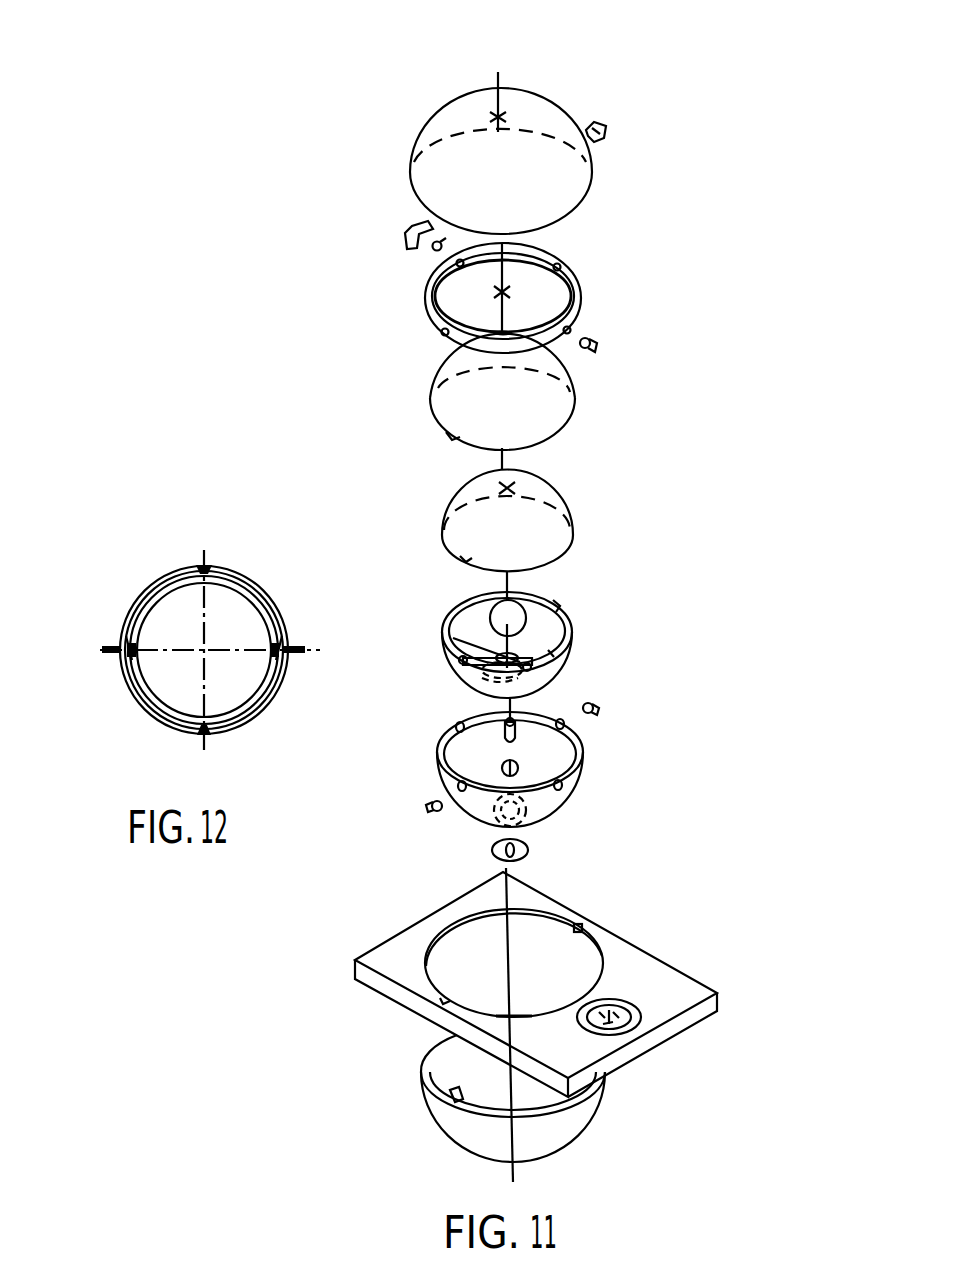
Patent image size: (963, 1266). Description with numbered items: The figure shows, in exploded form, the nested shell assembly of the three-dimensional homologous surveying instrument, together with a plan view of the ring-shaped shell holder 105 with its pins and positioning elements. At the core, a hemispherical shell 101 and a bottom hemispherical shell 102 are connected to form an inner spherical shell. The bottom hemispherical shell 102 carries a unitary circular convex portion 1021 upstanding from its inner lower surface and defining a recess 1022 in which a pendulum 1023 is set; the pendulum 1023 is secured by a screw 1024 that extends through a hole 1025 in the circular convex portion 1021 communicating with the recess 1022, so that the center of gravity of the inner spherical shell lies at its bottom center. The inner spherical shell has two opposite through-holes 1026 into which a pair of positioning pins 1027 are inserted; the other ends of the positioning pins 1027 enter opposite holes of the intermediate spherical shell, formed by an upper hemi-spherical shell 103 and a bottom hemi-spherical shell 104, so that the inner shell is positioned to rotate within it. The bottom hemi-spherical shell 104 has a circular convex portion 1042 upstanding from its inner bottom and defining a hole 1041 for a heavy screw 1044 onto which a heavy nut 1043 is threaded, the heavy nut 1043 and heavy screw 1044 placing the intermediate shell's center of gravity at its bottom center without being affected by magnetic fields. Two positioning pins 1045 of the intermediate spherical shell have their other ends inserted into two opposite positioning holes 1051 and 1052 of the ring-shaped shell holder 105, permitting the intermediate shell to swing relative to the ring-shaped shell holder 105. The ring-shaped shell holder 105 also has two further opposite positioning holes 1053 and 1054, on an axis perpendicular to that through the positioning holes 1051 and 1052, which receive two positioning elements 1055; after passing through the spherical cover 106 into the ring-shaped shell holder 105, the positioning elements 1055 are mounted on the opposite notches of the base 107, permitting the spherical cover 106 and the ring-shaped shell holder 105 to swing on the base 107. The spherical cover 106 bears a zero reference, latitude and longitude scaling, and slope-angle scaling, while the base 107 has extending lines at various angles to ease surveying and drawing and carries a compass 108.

In FIG. 11, the hemispherical shell 101 is at (550, 528).
In FIG. 11, the bottom hemispherical shell 102 is at (560, 612).
In FIG. 12, the bottom hemispherical shell 102 is at (185, 712).
In FIG. 11, the circular convex portion 1021 is at (455, 630).
In FIG. 11, the recess 1022 is at (500, 652).
In FIG. 11, the pendulum 1023 is at (503, 612).
In FIG. 11, the screw 1024 is at (522, 735).
In FIG. 11, the hole 1025 is at (563, 663).
In FIG. 11, the through-hole 1026 is at (552, 596).
In FIG. 11, the positioning pin 1027 is at (594, 708).
In FIG. 12, the positioning pin 1027 is at (131, 642).
In FIG. 11, the upper hemi-spherical shell 103 is at (550, 416).
In FIG. 11, the bottom hemi-spherical shell 104 is at (438, 754).
In FIG. 12, the bottom hemi-spherical shell 104 is at (143, 696).
In FIG. 11, the hole 1041 is at (305, 869).
In FIG. 11, the circular convex portion 1042 is at (527, 807).
In FIG. 11, the heavy nut 1043 is at (525, 766).
In FIG. 11, the heavy screw 1044 is at (528, 848).
In FIG. 11, the positioning pin 1045 is at (432, 247).
In FIG. 12, the positioning pin 1045 is at (204, 563).
In FIG. 11, the ring-shaped shell holder 105 is at (578, 277).
In FIG. 12, the ring-shaped shell holder 105 is at (167, 580).
In FIG. 11, the positioning hole 1051 is at (578, 316).
In FIG. 11, the positioning hole 1052 is at (428, 268).
In FIG. 11, the positioning hole 1053 is at (437, 328).
In FIG. 11, the positioning hole 1054 is at (565, 252).
In FIG. 11, the positioning element 1055 is at (413, 230).
In FIG. 12, the positioning element 1055 is at (112, 648).
In FIG. 11, the spherical cover 106 is at (442, 127).
In FIG. 12, the spherical cover 106 is at (250, 580).
In FIG. 11, the base 107 is at (465, 904).
In FIG. 11, the compass 108 is at (613, 1017).